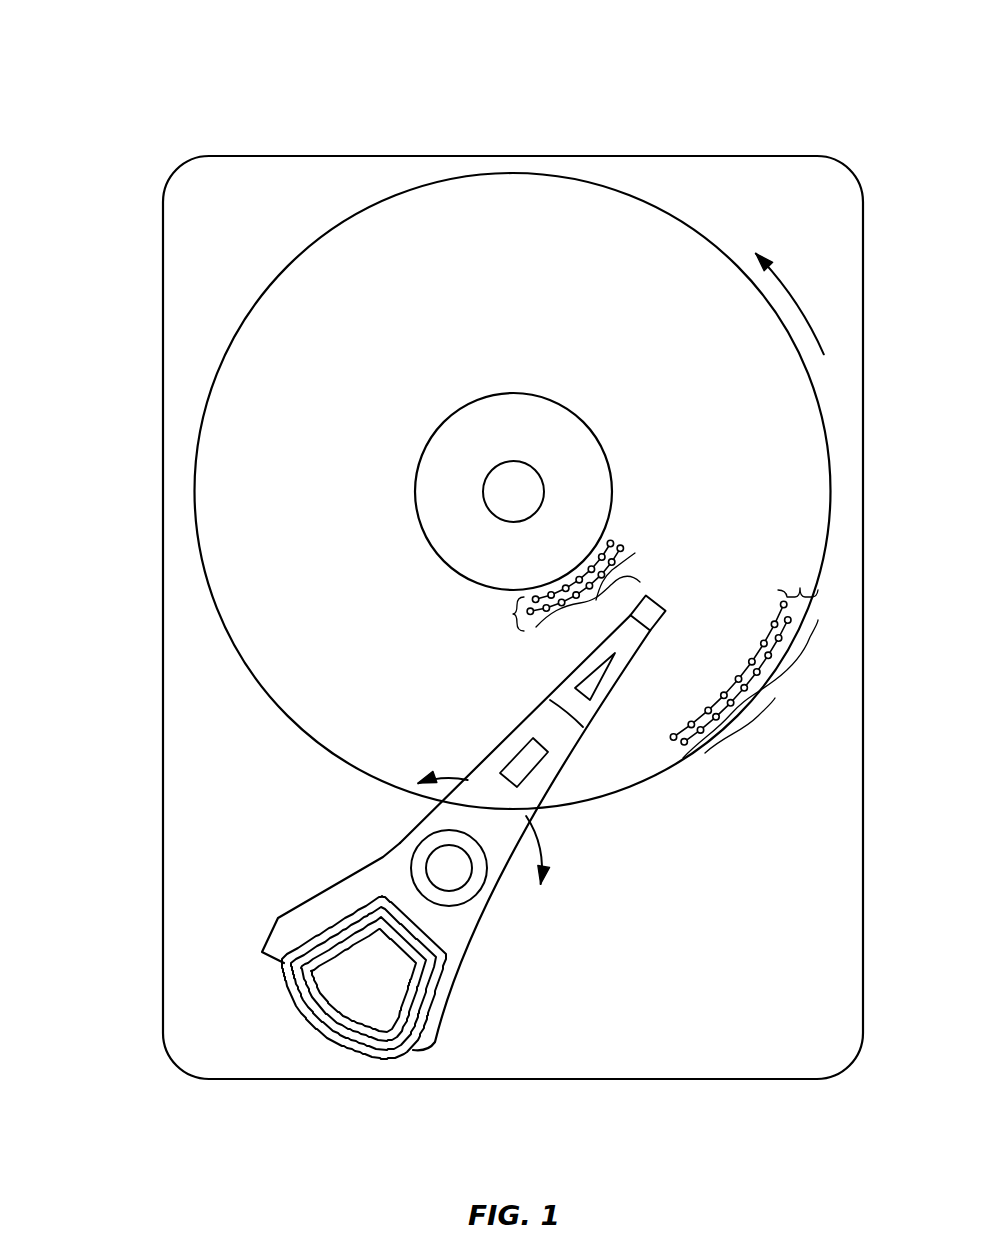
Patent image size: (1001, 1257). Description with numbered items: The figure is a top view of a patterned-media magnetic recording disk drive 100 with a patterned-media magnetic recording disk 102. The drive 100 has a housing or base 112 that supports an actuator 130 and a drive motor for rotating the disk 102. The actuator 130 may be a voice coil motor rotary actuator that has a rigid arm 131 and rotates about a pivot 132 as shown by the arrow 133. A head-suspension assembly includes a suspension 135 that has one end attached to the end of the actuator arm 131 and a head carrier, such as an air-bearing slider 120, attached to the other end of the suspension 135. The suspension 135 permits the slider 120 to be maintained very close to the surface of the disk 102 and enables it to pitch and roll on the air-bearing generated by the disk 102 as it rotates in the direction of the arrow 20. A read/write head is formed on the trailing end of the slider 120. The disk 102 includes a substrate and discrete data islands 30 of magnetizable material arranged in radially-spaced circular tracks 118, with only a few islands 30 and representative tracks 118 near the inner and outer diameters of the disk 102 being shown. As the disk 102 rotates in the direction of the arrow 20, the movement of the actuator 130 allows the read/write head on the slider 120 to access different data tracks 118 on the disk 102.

The patterned-media magnetic recording disk drive 100 is at (160, 52).
The patterned-media magnetic recording disk 102 is at (347, 220).
The housing or base 112 is at (777, 157).
The arrow 20 is at (790, 282).
The circular tracks 118 is at (513, 614).
The data islands 30 is at (677, 655).
The air-bearing slider 120 is at (660, 628).
The suspension 135 is at (564, 693).
The rigid arm 131 is at (498, 752).
The pivot 132 is at (438, 862).
The arrow 133 is at (543, 848).
The actuator 130 is at (278, 917).